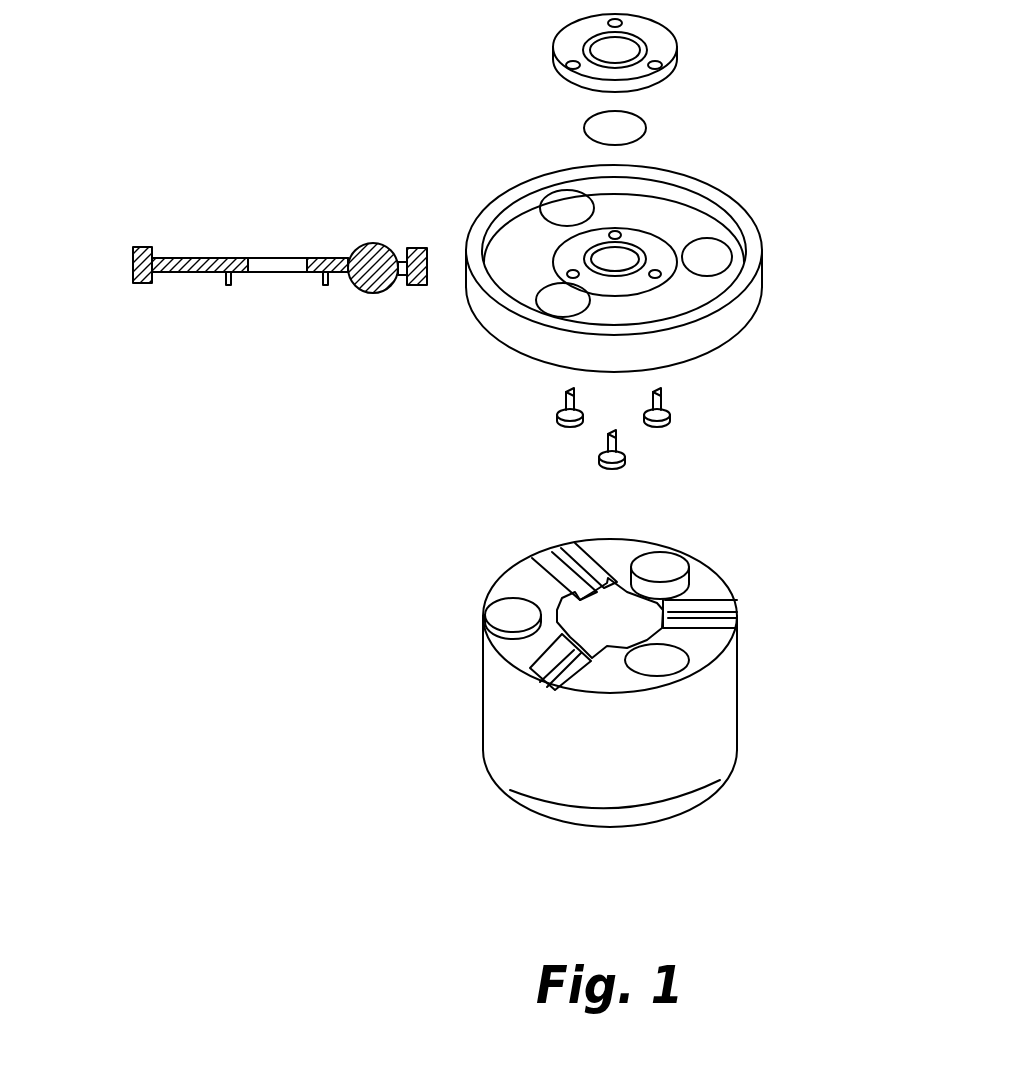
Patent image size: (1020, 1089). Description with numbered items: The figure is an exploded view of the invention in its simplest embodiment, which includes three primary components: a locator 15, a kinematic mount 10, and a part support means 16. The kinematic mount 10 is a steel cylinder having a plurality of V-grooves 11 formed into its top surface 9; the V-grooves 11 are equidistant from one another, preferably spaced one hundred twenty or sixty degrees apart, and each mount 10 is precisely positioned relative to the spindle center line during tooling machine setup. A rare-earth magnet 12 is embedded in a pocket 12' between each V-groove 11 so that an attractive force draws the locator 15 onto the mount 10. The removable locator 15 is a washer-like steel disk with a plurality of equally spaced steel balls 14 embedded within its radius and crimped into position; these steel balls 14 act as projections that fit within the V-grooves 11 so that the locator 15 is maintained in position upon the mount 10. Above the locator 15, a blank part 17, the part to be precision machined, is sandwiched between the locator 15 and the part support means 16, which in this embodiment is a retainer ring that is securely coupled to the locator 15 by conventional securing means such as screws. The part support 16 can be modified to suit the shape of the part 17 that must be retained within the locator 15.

The top surface 9 is at (500, 578).
The kinematic mount 10 is at (635, 674).
The V-groove 11 is at (740, 622).
The rare-earth magnet 12 is at (765, 532).
The pocket 12' is at (481, 523).
The steel balls 14 is at (363, 255).
The locator 15 is at (476, 228).
The part support means 16 is at (677, 48).
The blank part 17 is at (647, 128).